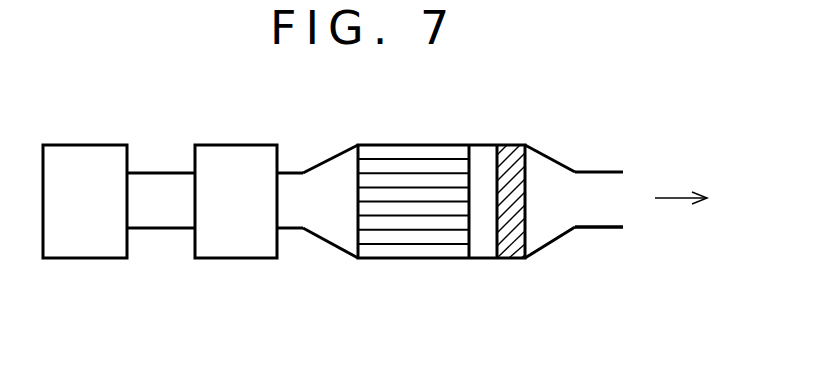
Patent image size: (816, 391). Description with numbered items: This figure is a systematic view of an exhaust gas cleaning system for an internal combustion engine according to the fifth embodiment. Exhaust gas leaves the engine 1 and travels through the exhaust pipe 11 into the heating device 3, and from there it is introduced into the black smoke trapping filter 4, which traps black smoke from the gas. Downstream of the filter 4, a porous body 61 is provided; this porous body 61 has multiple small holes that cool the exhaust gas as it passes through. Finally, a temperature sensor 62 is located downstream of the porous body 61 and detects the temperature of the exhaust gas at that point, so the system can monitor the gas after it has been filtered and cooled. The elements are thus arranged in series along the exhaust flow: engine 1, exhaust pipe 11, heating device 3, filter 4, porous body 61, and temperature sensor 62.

The engine 1 is at (73, 249).
The exhaust pipe 11 is at (163, 219).
The heating device 3 is at (235, 248).
The black smoke trapping filter 4 is at (409, 250).
The porous body 61 is at (508, 249).
The temperature sensor 62 is at (599, 214).